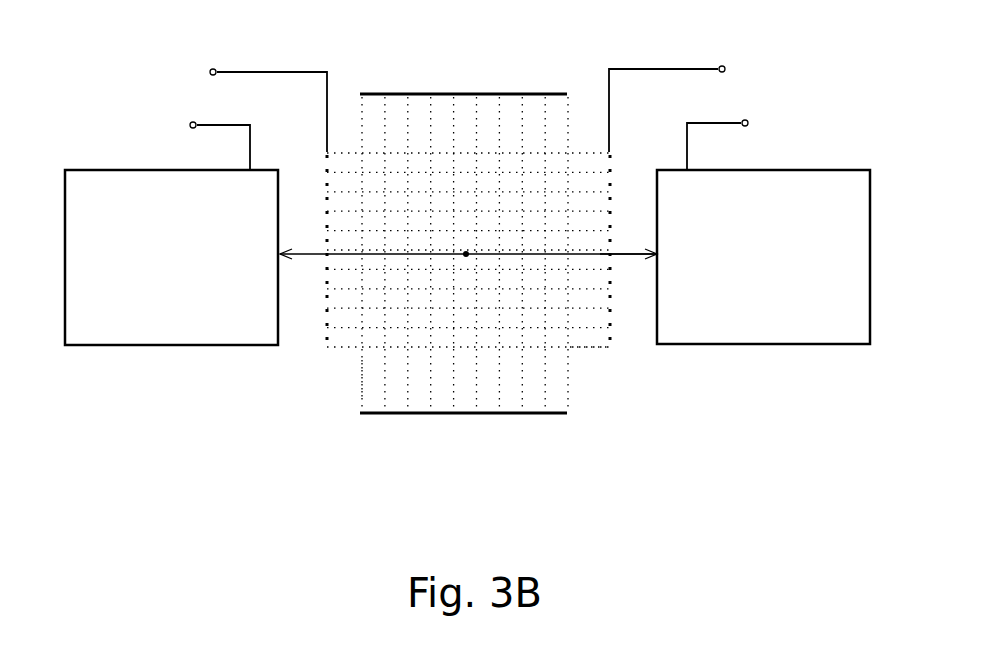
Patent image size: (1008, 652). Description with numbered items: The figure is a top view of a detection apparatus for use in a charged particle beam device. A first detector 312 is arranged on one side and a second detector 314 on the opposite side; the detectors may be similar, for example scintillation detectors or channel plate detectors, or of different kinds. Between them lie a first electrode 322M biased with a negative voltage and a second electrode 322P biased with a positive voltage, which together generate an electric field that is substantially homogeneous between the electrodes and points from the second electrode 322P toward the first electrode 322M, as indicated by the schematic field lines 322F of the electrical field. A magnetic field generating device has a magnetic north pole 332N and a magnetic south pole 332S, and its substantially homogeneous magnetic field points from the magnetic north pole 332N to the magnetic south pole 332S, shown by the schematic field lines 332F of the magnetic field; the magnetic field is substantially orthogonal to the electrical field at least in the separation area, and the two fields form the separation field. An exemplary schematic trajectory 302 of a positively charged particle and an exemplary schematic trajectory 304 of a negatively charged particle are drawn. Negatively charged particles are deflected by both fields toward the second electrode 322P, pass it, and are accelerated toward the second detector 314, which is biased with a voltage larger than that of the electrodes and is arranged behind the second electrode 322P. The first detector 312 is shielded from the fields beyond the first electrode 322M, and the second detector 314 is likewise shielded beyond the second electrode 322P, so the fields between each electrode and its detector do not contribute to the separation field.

The trajectory of a positively charged particle 302 is at (303, 252).
The trajectory of a negatively charged particle 304 is at (627, 252).
The first detector 312 is at (122, 332).
The second detector 314 is at (822, 330).
The first electrode 322M is at (325, 338).
The second electrode 322P is at (612, 338).
The field lines of the electrical field 322F is at (583, 348).
The field lines of the magnetic field 332F is at (362, 380).
The magnetic south pole 332S is at (460, 93).
The magnetic north pole 332N is at (443, 413).